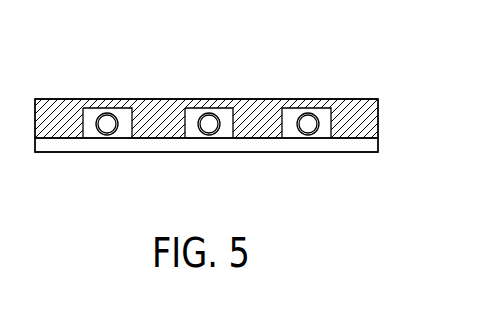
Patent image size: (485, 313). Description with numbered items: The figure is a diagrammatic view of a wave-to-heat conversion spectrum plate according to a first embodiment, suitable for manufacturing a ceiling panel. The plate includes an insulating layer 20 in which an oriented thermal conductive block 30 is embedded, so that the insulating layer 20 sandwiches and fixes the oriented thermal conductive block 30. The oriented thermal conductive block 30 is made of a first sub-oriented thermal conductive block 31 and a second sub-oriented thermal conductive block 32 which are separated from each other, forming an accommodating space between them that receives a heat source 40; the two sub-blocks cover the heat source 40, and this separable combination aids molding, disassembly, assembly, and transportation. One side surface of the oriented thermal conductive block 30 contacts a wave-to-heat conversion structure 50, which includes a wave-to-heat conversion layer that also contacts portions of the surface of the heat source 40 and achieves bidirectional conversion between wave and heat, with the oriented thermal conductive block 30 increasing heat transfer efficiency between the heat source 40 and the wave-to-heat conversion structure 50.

The insulating layer 20 is at (250, 103).
The oriented thermal conductive block 30 is at (147, 37).
The first sub-oriented thermal conductive block 31 is at (216, 102).
The second sub-oriented thermal conductive block 32 is at (174, 101).
The heat source 40 is at (98, 100).
The wave-to-heat conversion structure 50 is at (182, 144).